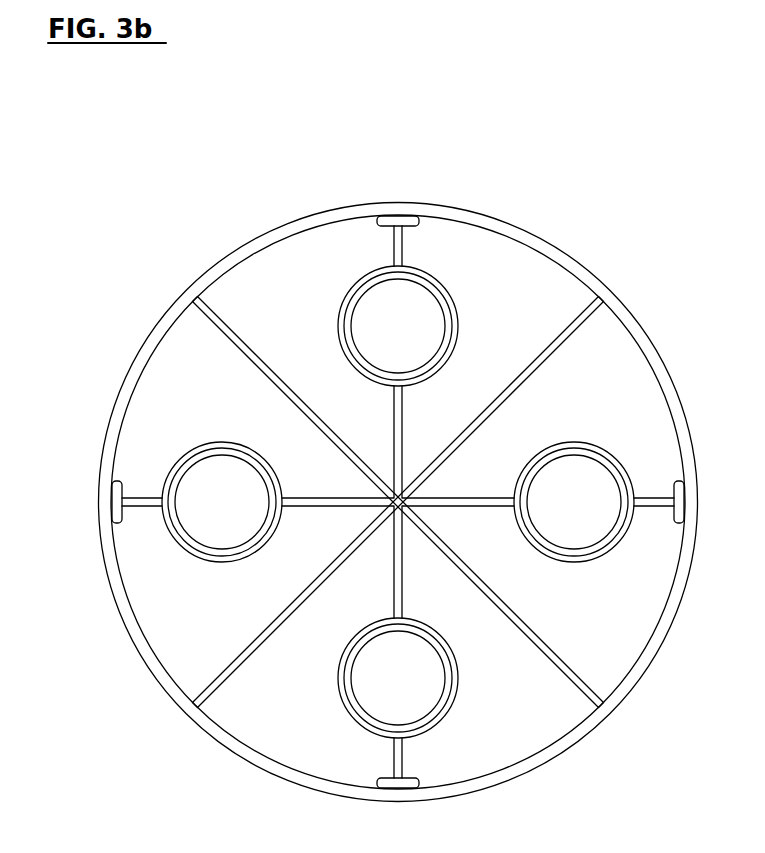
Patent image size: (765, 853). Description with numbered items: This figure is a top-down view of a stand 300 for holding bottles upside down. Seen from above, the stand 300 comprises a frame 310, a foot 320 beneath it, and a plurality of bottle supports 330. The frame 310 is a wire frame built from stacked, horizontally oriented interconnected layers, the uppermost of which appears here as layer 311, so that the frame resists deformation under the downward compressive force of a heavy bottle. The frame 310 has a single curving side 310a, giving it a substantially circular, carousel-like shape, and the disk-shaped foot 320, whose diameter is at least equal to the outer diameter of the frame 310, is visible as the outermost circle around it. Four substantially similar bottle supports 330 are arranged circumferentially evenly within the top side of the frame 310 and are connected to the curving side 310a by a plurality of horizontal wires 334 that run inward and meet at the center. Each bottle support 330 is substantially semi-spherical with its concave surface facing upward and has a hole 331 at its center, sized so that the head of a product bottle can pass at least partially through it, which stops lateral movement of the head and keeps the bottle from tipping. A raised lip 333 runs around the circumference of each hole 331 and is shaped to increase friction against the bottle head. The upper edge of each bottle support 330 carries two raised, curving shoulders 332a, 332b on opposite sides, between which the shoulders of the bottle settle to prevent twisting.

The stand 300 is at (192, 142).
The frame 310 is at (117, 494).
The curving side 310a is at (150, 320).
The interconnected layer 311 is at (338, 218).
The foot 320 is at (527, 236).
The bottle support 330 is at (452, 317).
The hole 331 is at (362, 332).
The raised curving shoulder 332a is at (404, 395).
The raised curving shoulder 332b is at (391, 266).
The raised lip 333 is at (428, 287).
The horizontal wire 334 is at (392, 453).